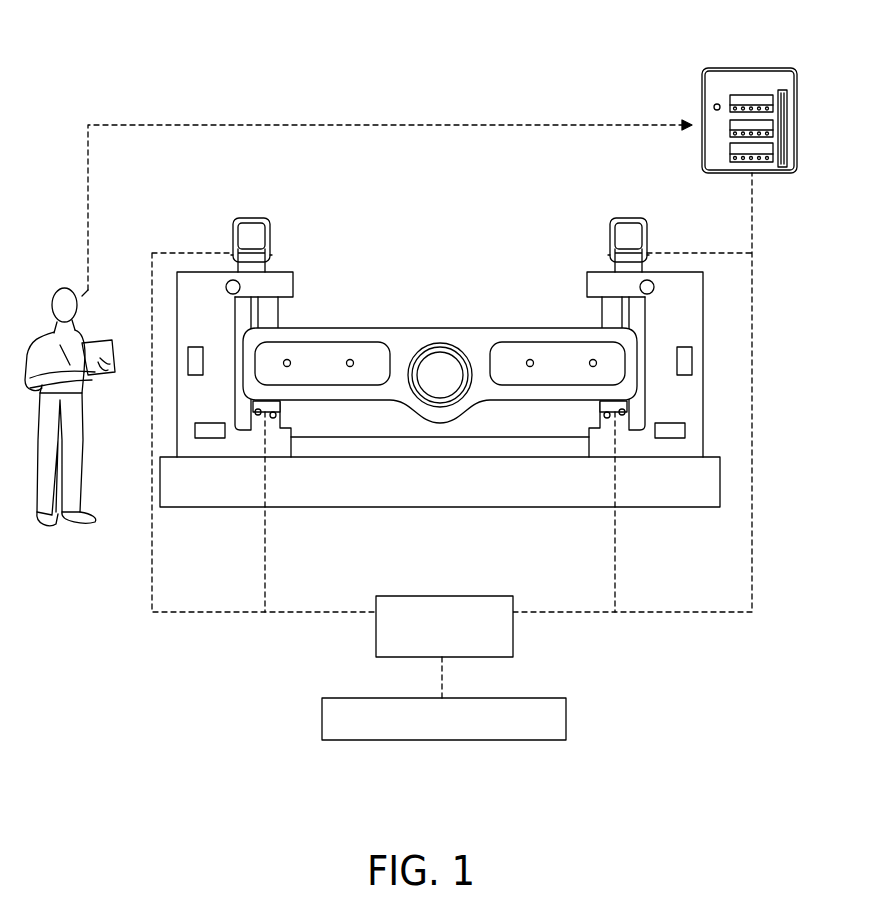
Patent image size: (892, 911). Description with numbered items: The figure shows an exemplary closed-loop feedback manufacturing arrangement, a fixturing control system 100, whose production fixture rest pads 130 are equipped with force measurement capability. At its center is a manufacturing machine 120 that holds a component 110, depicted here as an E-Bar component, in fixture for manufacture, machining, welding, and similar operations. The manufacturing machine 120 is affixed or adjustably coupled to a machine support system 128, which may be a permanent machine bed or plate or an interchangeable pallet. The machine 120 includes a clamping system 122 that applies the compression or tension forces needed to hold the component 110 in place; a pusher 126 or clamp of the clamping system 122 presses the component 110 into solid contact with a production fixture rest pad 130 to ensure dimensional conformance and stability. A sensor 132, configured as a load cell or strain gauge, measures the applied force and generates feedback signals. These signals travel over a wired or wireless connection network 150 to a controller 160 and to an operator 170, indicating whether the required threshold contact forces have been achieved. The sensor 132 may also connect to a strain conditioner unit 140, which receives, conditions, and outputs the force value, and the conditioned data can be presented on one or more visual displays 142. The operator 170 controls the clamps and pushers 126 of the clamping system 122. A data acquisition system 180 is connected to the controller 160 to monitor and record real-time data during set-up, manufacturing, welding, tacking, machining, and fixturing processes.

The fixturing control system 100 is at (263, 81).
The component 110 is at (405, 328).
The manufacturing machine 120 is at (207, 272).
The clamping system 122 is at (258, 218).
The pusher 126 is at (282, 414).
The machine support system 128 is at (722, 470).
The production fixture rest pad 130 is at (250, 400).
The sensor 132 is at (250, 405).
The strain conditioner unit 140 is at (767, 68).
The visual display 142 is at (776, 105).
The connection network 150 is at (266, 553).
The controller 160 is at (444, 596).
The operator 170 is at (63, 288).
The data acquisition system 180 is at (568, 717).